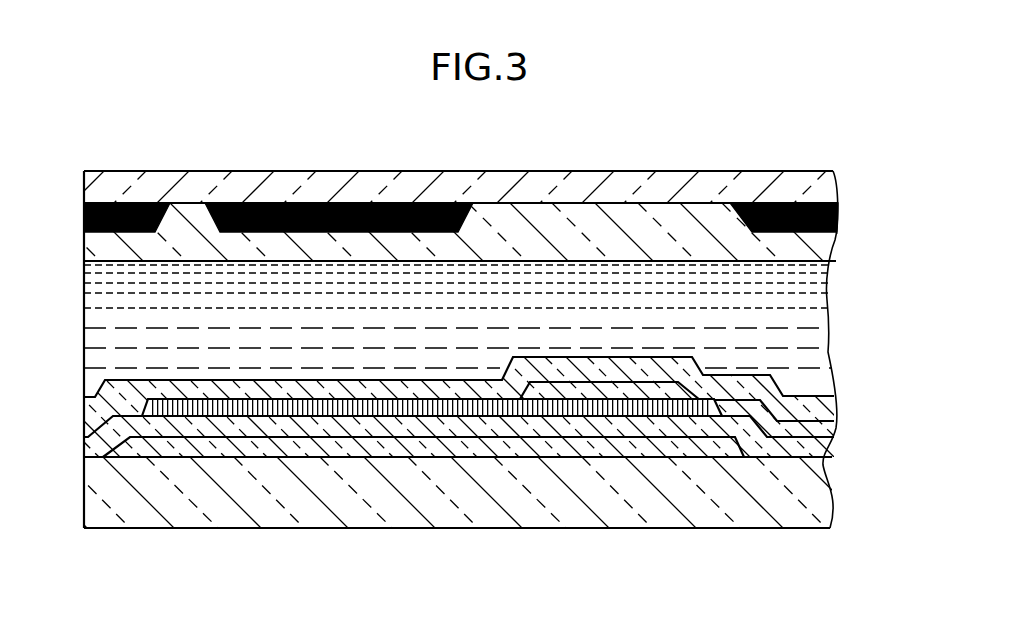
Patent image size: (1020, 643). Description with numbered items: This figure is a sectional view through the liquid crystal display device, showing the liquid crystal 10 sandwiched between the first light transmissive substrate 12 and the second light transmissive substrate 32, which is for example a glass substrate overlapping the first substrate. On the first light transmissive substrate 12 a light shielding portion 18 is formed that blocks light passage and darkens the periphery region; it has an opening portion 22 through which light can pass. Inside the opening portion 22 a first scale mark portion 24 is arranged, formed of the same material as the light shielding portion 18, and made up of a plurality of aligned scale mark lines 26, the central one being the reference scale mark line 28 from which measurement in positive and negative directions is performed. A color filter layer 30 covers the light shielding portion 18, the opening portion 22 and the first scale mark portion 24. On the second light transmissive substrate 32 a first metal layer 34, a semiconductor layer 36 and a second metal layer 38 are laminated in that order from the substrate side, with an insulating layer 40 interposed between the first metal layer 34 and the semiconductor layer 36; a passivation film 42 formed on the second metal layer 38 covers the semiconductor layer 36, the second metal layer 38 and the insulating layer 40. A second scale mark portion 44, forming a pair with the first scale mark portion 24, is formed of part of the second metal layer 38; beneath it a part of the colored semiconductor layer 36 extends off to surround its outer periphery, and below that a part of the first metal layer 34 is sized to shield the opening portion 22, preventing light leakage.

The liquid crystal 10 is at (822, 320).
The first light transmissive substrate 12 is at (828, 188).
The light shielding portion 18 is at (121, 212).
The opening portion 22 is at (558, 228).
The first scale mark portion 24 is at (339, 170).
The scale mark lines 26 is at (339, 170).
The reference scale mark line 28 is at (388, 212).
The color filter layer 30 is at (817, 246).
The second light transmissive substrate 32 is at (817, 508).
The first metal layer 34 is at (720, 450).
The semiconductor layer 36 is at (697, 406).
The second metal layer 38 is at (700, 358).
The insulating layer 40 is at (823, 447).
The passivation film 42 is at (665, 384).
The second scale mark portion 44 is at (604, 399).